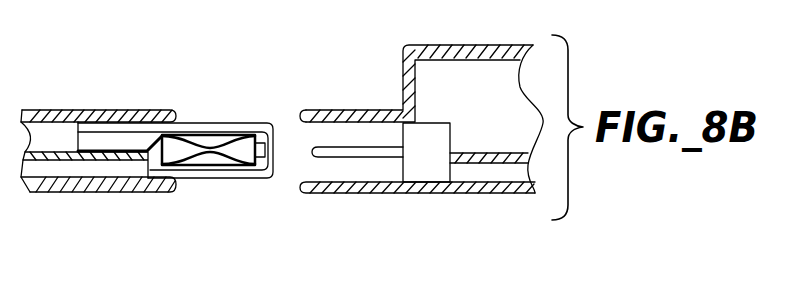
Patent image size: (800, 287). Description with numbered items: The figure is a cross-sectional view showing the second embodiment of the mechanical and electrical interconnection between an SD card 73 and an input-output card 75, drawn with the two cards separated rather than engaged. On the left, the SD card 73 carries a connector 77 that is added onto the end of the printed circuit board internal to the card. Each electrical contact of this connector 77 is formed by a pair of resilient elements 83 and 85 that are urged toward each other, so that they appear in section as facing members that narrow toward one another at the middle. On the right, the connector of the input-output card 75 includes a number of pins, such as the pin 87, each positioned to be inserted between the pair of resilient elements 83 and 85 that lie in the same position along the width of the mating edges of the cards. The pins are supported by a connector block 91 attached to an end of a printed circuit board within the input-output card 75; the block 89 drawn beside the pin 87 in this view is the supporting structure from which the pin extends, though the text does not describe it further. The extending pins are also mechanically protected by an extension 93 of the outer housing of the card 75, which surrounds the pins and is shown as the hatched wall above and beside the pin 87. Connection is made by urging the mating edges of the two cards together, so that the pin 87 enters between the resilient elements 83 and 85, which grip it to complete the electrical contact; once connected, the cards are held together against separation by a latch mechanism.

The SD card 73 is at (148, 150).
The input-output card 75 is at (422, 140).
The connector 77 is at (182, 132).
The resilient element 83 is at (213, 147).
The resilient element 85 is at (216, 157).
The pin 87 is at (348, 152).
The block 89 is at (425, 170).
The connector block 91 is at (472, 154).
The extension 93 is at (330, 112).